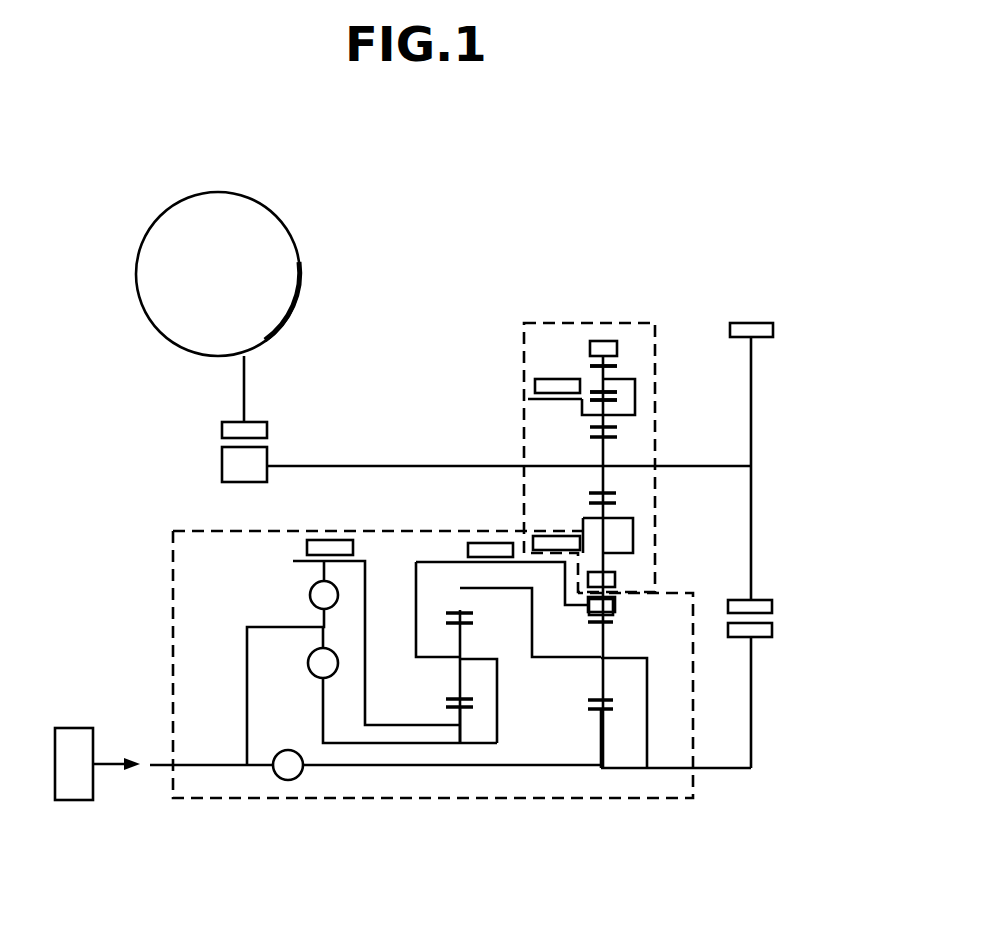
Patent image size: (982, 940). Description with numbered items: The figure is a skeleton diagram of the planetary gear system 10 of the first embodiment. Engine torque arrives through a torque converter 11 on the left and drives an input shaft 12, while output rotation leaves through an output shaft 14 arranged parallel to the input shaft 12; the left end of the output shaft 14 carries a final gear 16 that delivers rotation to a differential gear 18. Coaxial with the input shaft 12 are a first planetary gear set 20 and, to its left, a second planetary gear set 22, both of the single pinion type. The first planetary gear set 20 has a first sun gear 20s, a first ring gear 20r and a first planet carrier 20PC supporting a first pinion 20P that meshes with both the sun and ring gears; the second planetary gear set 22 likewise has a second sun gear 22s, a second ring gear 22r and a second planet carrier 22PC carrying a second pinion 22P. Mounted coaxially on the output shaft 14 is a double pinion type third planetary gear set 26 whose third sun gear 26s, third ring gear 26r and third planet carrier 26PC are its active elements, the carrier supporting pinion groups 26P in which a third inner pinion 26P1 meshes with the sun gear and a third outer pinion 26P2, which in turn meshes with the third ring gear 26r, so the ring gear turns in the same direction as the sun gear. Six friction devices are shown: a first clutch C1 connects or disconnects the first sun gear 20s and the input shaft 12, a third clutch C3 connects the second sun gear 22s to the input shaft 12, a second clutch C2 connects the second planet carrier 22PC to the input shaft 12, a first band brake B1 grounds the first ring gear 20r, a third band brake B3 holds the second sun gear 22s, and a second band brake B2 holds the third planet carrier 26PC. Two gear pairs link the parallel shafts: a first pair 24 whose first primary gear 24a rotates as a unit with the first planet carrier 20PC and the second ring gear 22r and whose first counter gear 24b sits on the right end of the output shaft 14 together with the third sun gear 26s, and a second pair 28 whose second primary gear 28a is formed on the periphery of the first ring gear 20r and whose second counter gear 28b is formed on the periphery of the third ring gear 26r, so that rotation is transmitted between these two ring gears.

The planetary gear system 10 is at (594, 268).
The torque converter 11 is at (86, 800).
The input shaft 12 is at (225, 767).
The output shaft 14 is at (489, 465).
The final gear 16 is at (222, 445).
The differential gear 18 is at (152, 333).
The first planetary gear set 20 is at (611, 760).
The first ring gear 20r is at (613, 619).
The first planet carrier 20PC is at (602, 682).
The first pinion 20P is at (615, 660).
The first sun gear 20s is at (603, 721).
The second planetary gear set 22 is at (457, 747).
The second ring gear 22r is at (472, 605).
The second planet carrier 22PC is at (480, 660).
The second pinion 22P is at (460, 682).
The second sun gear 22s is at (463, 712).
The first pair of primary and counter gears 24 is at (843, 598).
The first primary gear 24a is at (772, 632).
The first counter gear 24b is at (772, 608).
The third planetary gear set 26 is at (607, 312).
The third ring gear 26r is at (614, 350).
The third pinions 26P is at (747, 280).
The third inner pinion 26P1 is at (617, 404).
The third outer pinion 26P2 is at (604, 372).
The third planet carrier 26PC is at (565, 407).
The third sun gear 26s is at (606, 452).
The second pair of primary and counter gears 28 is at (836, 480).
The second primary gear 28a is at (618, 598).
The second counter gear 28b is at (620, 584).
The first band brake B1 is at (490, 543).
The second band brake B2 is at (537, 387).
The third band brake B3 is at (324, 540).
The first clutch C1 is at (288, 781).
The second clutch C2 is at (308, 663).
The third clutch C3 is at (310, 597).